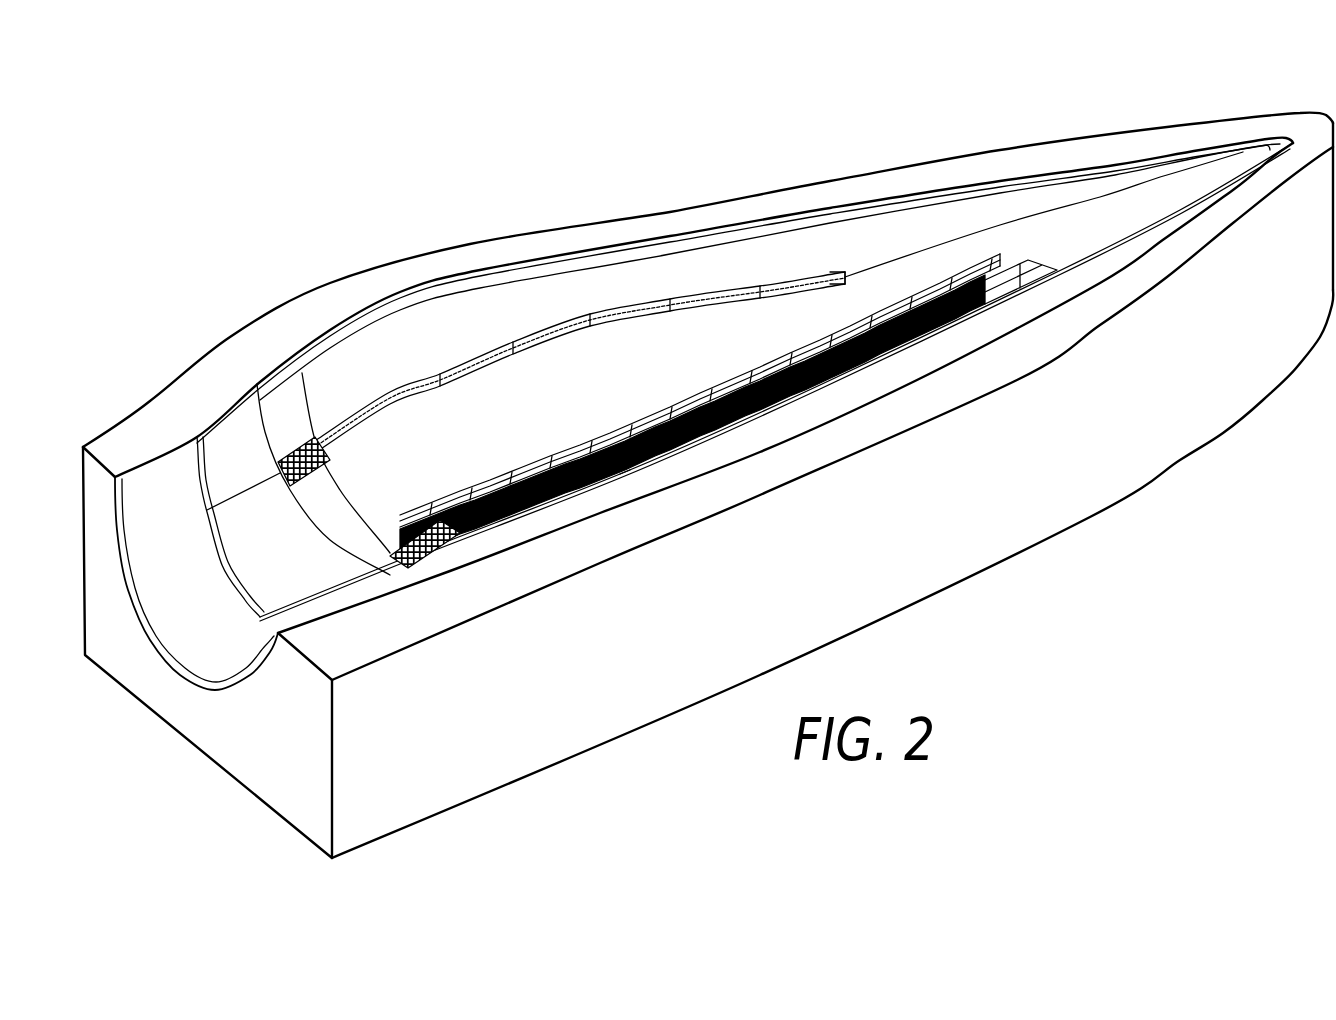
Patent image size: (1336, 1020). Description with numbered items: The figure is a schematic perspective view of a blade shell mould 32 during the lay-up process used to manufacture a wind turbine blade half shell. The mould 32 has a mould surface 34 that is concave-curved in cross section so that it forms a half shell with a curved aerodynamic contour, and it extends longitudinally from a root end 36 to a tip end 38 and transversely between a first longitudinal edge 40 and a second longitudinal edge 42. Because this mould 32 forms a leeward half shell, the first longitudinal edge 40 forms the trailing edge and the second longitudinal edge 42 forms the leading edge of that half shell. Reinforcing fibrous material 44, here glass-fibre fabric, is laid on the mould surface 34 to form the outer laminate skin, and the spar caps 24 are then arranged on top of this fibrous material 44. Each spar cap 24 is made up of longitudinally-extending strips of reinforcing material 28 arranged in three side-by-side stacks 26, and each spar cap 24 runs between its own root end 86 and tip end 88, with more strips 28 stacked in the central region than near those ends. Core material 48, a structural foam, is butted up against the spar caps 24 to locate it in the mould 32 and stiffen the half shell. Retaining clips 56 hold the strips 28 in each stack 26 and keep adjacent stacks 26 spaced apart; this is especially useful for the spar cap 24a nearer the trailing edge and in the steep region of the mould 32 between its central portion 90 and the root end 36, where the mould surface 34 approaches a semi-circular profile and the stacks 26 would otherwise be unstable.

The spar cap 24 is at (705, 384).
The spar cap nearer to the trailing edge 24a is at (536, 300).
The stack 26 is at (536, 474).
The strip of reinforcing material 28 is at (500, 347).
The blade shell mould 32 is at (490, 760).
The mould surface 34 is at (163, 668).
The root end 36 is at (104, 418).
The tip end 38 is at (1274, 125).
The first longitudinal edge 40 is at (680, 238).
The second longitudinal edge 42 is at (846, 415).
The reinforcing fibrous material 44 is at (156, 620).
The core material 48 is at (362, 396).
The retaining clip 56 is at (468, 515).
The root end of the spar cap 86 is at (279, 492).
The tip end of the spar cap 88 is at (860, 279).
The central portion of the mould 90 is at (392, 326).